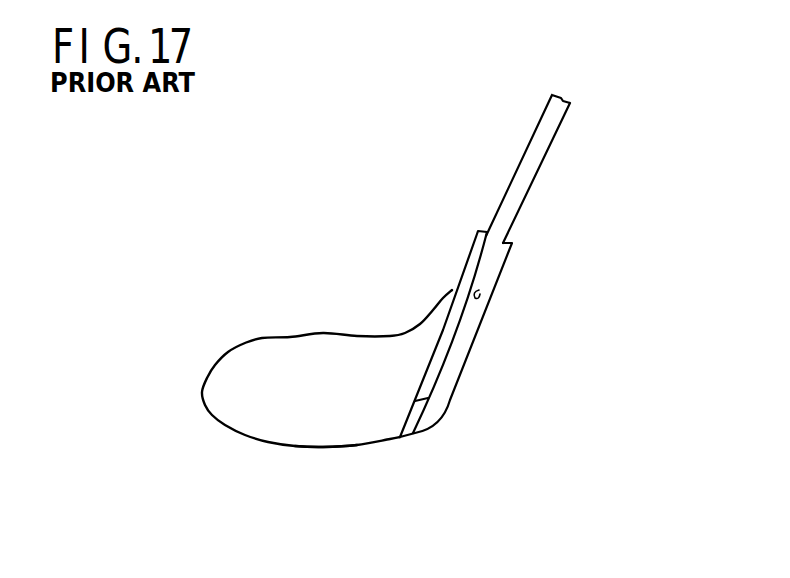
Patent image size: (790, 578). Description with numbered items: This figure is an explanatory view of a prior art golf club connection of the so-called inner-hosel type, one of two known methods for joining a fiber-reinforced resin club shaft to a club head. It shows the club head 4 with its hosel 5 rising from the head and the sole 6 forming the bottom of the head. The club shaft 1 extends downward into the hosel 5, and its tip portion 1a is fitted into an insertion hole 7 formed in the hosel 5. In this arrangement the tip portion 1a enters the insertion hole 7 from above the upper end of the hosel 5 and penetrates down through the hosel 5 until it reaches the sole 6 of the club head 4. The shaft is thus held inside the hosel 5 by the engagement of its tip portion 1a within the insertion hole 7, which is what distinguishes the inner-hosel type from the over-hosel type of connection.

The club shaft 1 is at (542, 189).
The tip portion 1a is at (445, 353).
The club head 4 is at (225, 353).
The hosel 5 is at (441, 312).
The sole 6 is at (323, 447).
The insertion hole 7 is at (479, 290).